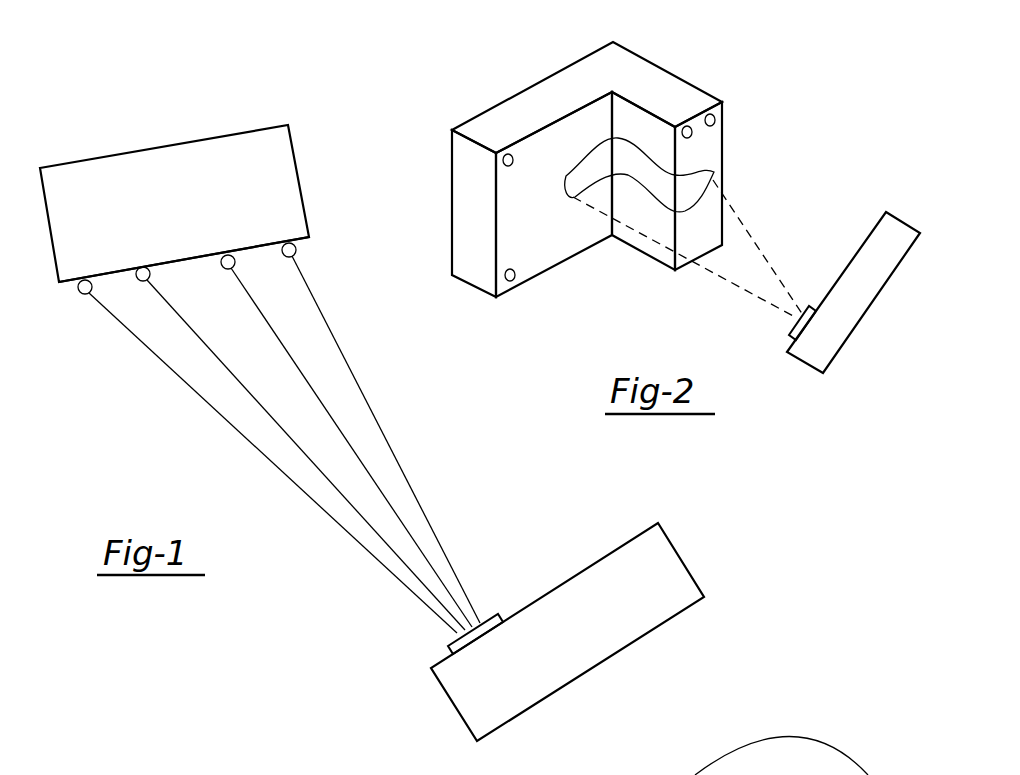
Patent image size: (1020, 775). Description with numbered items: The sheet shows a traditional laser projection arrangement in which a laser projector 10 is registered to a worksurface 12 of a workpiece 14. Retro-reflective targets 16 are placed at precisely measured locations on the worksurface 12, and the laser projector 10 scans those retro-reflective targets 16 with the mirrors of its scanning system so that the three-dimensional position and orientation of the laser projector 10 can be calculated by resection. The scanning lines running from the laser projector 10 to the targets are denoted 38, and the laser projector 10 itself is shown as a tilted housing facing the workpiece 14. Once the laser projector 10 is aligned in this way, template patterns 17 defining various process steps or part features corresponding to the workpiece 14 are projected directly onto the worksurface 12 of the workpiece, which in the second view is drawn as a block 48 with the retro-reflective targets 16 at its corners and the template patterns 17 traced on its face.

In FIG. 1, the laser projector 10 is at (573, 648).
In FIG. 2, the laser projector 10 is at (864, 303).
In FIG. 1, the worksurface 12 is at (183, 266).
In FIG. 1, the workpiece 14 is at (183, 203).
In FIG. 1, the retro-reflective targets 16 is at (79, 286).
In FIG. 2, the retro-reflective targets 16 is at (516, 276).
In FIG. 2, the template patterns 17 is at (565, 180).
In FIG. 1, the line of sight 38 is at (358, 382).
In FIG. 2, the line of sight 38 is at (753, 232).
In FIG. 2, the workpiece 48 is at (531, 218).